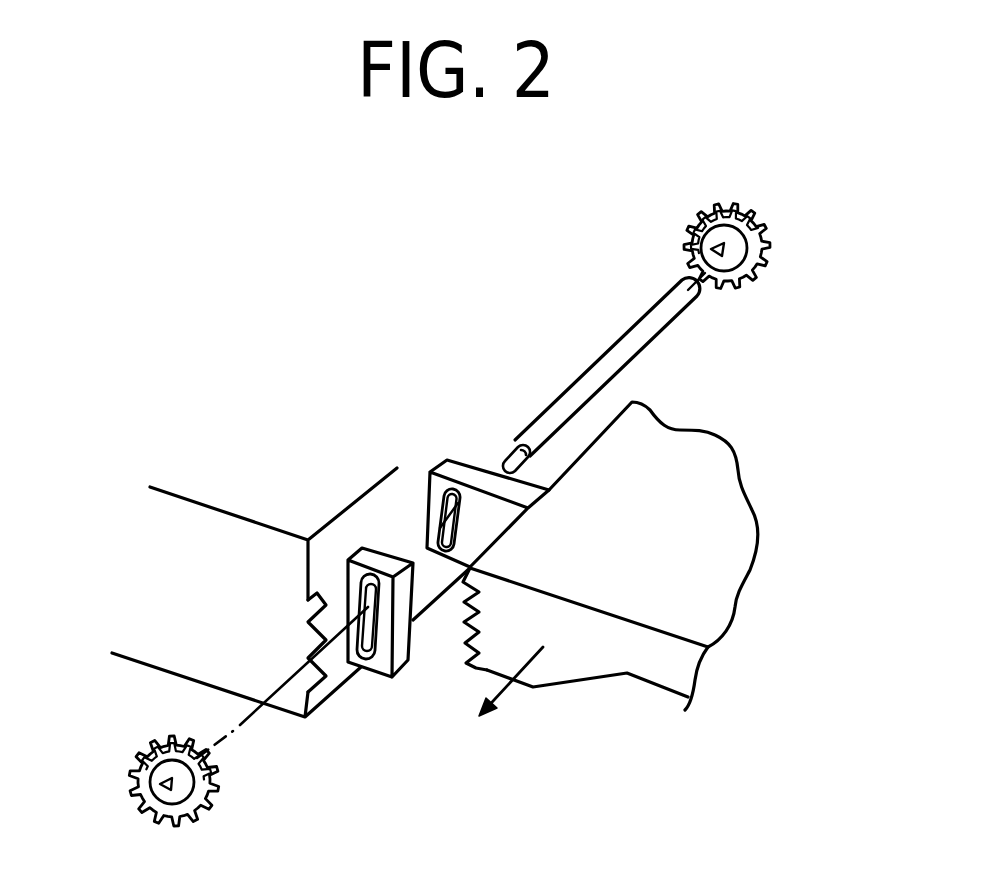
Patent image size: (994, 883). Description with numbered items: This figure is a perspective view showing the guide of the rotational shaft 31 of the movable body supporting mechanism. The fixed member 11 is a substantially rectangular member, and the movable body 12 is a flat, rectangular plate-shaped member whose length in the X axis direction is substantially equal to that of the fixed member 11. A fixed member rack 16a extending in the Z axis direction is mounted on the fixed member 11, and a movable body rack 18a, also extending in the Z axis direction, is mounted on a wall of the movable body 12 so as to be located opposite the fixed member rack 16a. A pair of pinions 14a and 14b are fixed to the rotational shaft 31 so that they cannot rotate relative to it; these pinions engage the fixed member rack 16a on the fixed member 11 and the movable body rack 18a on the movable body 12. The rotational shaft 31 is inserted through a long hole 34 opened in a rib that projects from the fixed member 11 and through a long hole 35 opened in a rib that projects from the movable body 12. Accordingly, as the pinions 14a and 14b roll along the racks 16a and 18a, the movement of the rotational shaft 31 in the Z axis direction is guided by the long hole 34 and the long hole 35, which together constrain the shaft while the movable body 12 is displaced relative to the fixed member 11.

The fixed member 11 is at (213, 522).
The movable body 12 is at (642, 663).
The pinion 14a is at (160, 740).
The pinion 14b is at (766, 220).
The fixed member rack 16a is at (308, 688).
The movable body rack 18a is at (478, 645).
The rotational shaft 31 is at (633, 347).
The long hole 34 is at (356, 554).
The long hole 35 is at (440, 480).